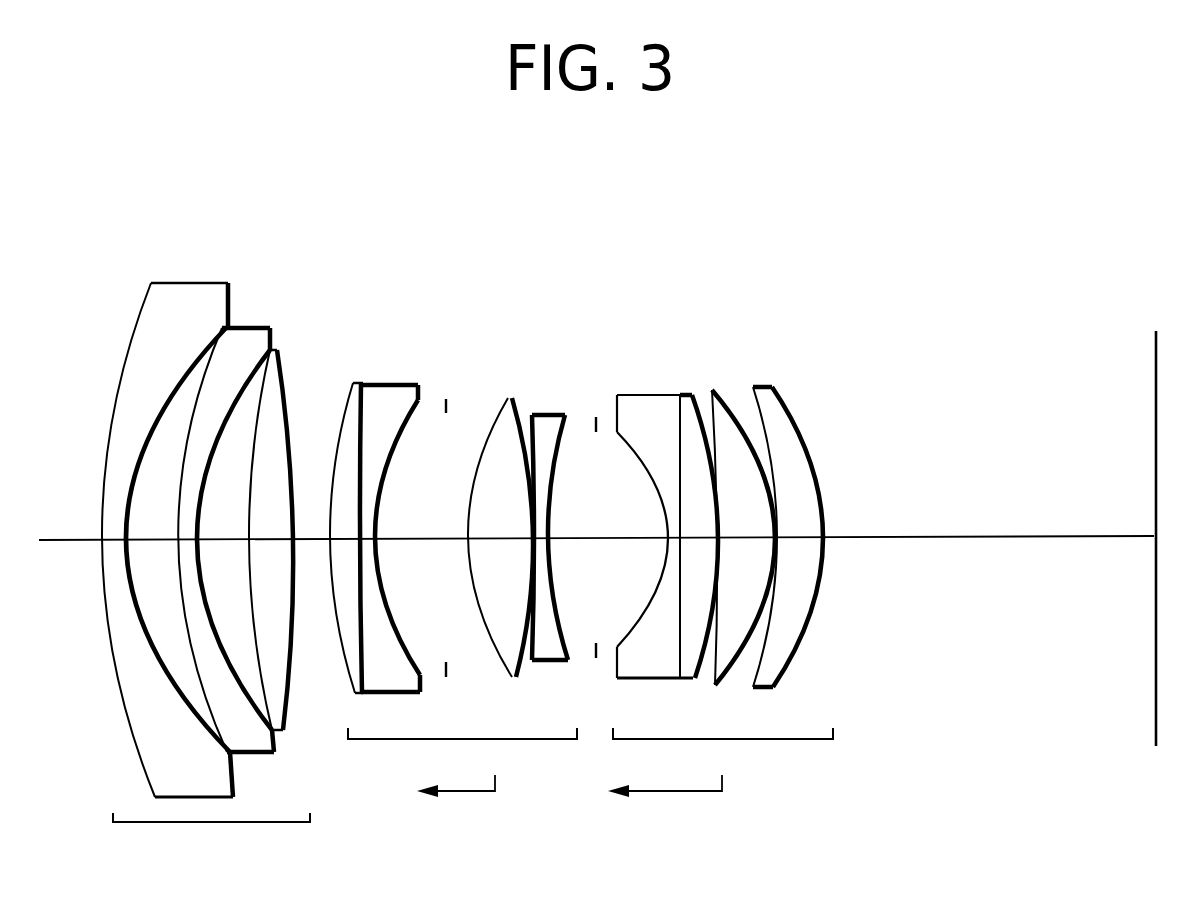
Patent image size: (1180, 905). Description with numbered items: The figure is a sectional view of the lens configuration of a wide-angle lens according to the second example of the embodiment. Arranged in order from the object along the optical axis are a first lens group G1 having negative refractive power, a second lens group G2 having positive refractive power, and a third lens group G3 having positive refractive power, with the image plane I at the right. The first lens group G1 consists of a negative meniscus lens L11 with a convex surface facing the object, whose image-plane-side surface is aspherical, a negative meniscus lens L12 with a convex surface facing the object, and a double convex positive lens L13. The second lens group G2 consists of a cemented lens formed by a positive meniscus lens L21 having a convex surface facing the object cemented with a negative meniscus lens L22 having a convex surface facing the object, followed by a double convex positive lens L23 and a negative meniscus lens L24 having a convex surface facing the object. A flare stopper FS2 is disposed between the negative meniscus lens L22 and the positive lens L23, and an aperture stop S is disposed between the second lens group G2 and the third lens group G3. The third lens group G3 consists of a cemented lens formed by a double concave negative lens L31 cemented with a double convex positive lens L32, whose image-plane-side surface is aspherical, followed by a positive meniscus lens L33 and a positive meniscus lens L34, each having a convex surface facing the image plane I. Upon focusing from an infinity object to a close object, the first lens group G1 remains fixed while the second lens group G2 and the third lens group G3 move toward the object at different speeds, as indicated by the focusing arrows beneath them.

The negative meniscus lens L11 is at (175, 283).
The negative meniscus lens L12 is at (242, 327).
The double convex positive lens L13 is at (278, 350).
The positive meniscus lens L21 is at (362, 382).
The negative meniscus lens L22 is at (398, 385).
The double convex positive lens L23 is at (508, 397).
The negative meniscus lens L24 is at (550, 415).
The flare stopper FS2 is at (444, 400).
The aperture stop S is at (596, 418).
The double concave negative lens L31 is at (642, 394).
The double convex positive lens L32 is at (689, 394).
The positive meniscus lens L33 is at (731, 392).
The positive meniscus lens L34 is at (772, 386).
The image plane I is at (1156, 388).
The first lens group G1 is at (211, 837).
The second lens group G2 is at (462, 781).
The third lens group G3 is at (721, 781).